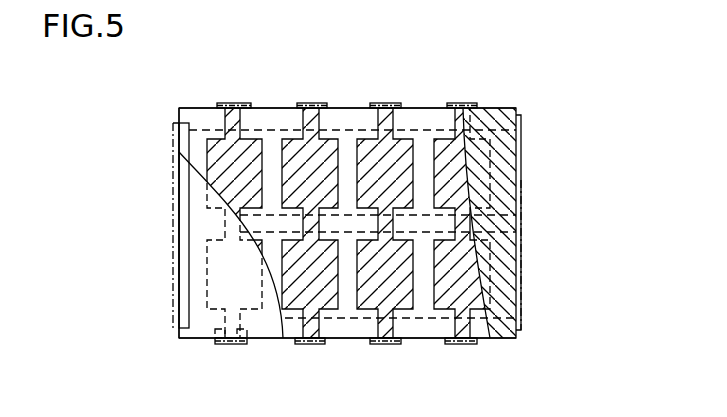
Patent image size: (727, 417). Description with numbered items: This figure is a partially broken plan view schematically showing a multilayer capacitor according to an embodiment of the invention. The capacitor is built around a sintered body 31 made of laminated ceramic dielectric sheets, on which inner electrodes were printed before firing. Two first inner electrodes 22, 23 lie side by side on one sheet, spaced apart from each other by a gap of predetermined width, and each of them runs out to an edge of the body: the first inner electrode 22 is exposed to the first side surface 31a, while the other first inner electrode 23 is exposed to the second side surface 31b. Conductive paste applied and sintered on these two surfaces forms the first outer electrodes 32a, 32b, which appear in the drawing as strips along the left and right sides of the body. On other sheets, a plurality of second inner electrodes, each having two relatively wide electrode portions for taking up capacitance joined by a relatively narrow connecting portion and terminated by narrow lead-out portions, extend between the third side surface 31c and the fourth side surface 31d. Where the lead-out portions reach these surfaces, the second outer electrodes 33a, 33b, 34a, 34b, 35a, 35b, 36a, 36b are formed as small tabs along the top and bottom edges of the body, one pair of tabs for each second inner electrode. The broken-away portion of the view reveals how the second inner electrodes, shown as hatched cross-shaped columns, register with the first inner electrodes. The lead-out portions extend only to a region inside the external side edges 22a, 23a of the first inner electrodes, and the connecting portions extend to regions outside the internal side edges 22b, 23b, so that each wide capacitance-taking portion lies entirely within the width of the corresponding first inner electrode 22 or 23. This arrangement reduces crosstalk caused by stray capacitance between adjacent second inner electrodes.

The sintered body 31 is at (509, 105).
The first side surface 31a is at (178, 109).
The second side surface 31b is at (521, 113).
The third side surface 31c is at (276, 107).
The fourth side surface 31d is at (270, 341).
The first outer electrode 32a is at (172, 258).
The first outer electrode 32b is at (522, 167).
The second outer electrode 33a is at (222, 102).
The second outer electrode 33b is at (222, 346).
The second outer electrode 34a is at (323, 102).
The second outer electrode 34b is at (312, 346).
The second outer electrode 35a is at (393, 102).
The second outer electrode 35b is at (386, 345).
The second outer electrode 36a is at (462, 102).
The second outer electrode 36b is at (465, 346).
The first inner electrode 22 is at (518, 252).
The external side edge 22a is at (517, 339).
The internal side edge 22b is at (516, 226).
The first inner electrode 23 is at (513, 185).
The external side edge 23a is at (516, 121).
The internal side edge 23b is at (500, 214).